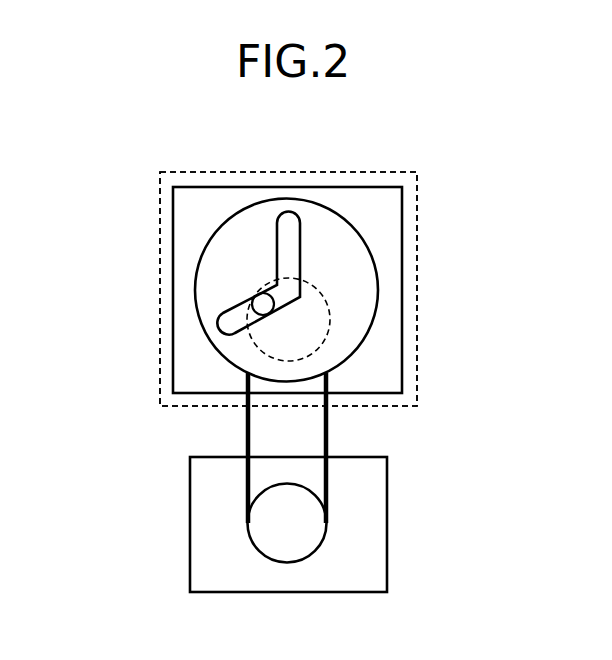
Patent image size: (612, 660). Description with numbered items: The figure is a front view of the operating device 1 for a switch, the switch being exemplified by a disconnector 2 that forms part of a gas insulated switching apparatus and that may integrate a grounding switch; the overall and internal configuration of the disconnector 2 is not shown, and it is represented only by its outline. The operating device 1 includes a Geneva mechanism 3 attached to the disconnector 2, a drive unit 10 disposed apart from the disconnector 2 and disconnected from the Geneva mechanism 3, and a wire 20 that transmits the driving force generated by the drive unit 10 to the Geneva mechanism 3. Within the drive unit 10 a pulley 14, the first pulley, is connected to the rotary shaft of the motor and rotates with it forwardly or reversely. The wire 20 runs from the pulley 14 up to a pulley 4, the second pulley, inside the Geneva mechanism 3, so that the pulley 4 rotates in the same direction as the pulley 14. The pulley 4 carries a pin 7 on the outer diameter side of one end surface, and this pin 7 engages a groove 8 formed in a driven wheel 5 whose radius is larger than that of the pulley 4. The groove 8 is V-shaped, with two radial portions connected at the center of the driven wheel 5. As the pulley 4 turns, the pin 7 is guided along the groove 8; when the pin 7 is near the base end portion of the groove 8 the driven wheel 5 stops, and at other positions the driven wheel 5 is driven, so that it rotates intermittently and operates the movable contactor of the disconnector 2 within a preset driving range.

The operating device 1 is at (130, 406).
The disconnector 2 is at (418, 205).
The Geneva mechanism 3 is at (372, 186).
The pulley 4 is at (331, 313).
The driven wheel 5 is at (332, 209).
The pin 7 is at (252, 303).
The groove 8 is at (283, 215).
The drive unit 10 is at (388, 472).
The pulley 14 is at (328, 521).
The wire 20 is at (331, 425).